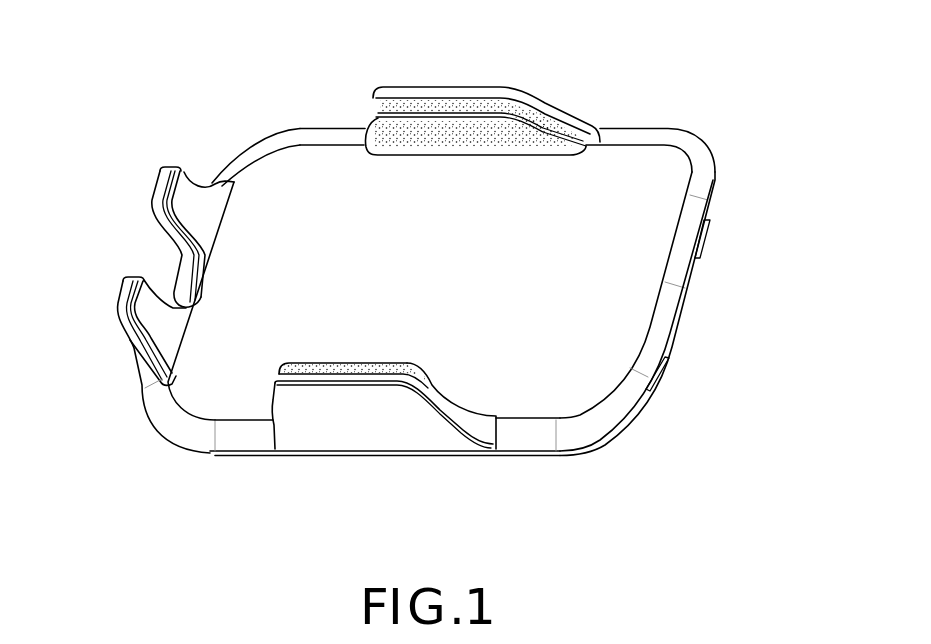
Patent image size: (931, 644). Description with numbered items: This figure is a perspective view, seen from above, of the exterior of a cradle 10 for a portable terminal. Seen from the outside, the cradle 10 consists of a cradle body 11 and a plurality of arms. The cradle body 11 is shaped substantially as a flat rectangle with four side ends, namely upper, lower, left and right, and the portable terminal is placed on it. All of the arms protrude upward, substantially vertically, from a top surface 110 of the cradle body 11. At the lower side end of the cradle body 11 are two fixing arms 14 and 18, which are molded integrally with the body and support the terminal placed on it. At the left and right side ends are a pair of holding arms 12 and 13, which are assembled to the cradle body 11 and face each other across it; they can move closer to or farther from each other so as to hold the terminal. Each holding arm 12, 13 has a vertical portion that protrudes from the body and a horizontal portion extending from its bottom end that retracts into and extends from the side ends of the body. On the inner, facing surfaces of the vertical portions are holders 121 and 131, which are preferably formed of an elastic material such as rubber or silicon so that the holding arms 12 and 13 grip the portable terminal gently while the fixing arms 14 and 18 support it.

The cradle 10 is at (303, 63).
The cradle body 11 is at (713, 273).
The top surface 110 is at (610, 335).
The holding arm 12 is at (483, 89).
The holder 121 is at (445, 130).
The holding arm 13 is at (384, 425).
The holder 131 is at (349, 363).
The fixing arm 14 is at (184, 186).
The fixing arm 18 is at (147, 320).